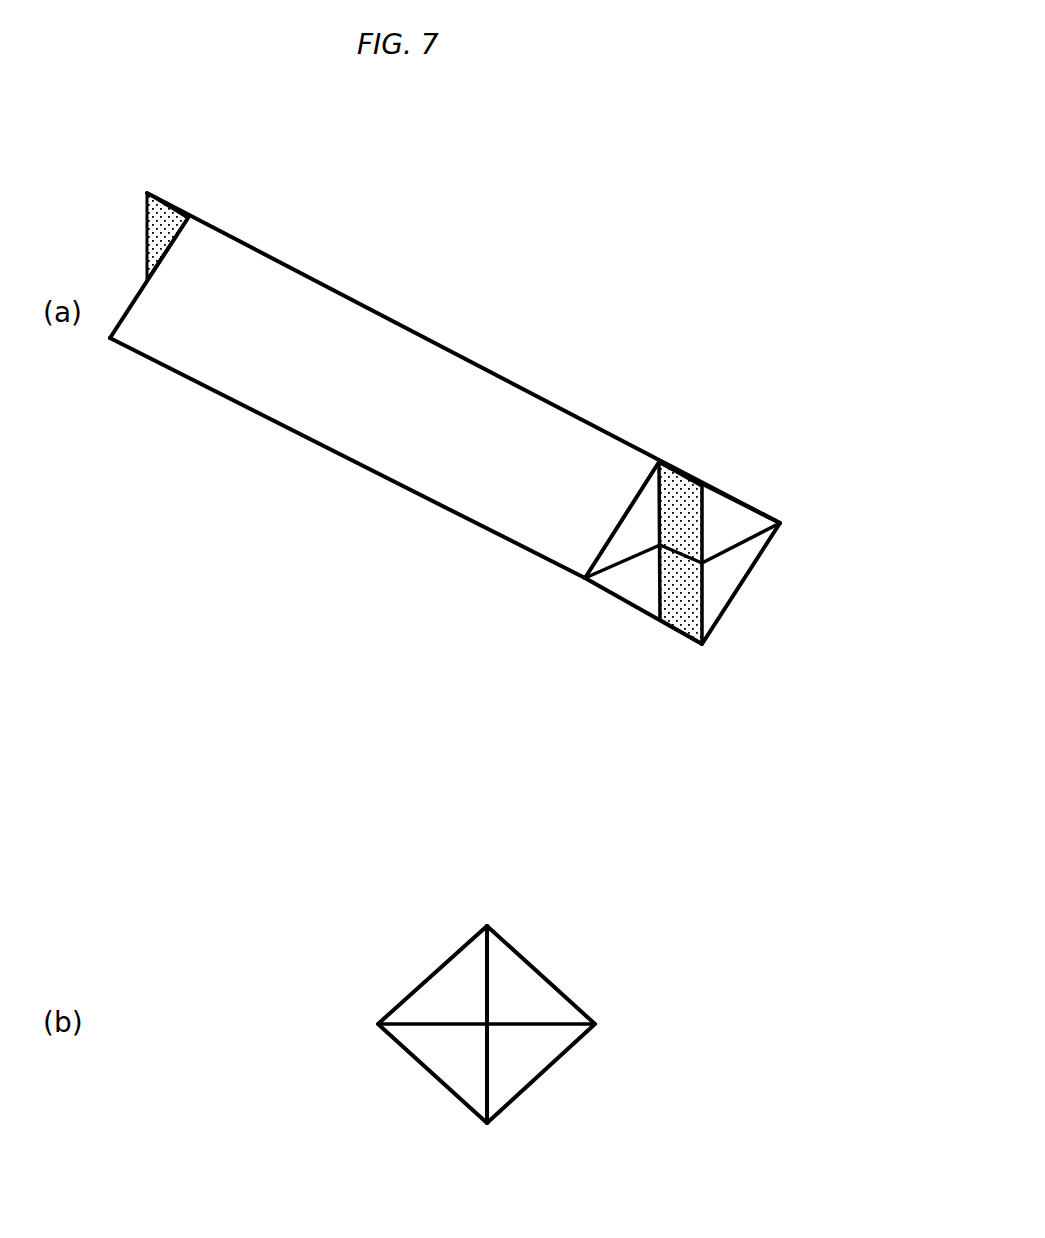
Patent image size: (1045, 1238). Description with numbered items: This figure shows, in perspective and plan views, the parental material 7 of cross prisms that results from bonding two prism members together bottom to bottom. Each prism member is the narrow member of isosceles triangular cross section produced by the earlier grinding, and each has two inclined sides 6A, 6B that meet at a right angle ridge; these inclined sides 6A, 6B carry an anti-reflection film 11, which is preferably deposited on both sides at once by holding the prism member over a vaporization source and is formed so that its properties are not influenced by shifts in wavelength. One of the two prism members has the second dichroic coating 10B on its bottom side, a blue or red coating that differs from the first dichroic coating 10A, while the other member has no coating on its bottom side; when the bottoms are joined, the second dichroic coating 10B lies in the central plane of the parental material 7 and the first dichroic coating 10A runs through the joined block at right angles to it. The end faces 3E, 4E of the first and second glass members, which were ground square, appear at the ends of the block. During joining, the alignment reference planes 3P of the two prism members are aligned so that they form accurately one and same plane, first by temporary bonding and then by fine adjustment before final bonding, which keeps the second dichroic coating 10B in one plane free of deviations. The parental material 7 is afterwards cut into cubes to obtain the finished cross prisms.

The cross prism parental material 7 is at (450, 625).
The alignment reference plane 3P is at (160, 235).
The end face of the first glass member 3E is at (720, 513).
The end face of the second glass member 4E is at (632, 525).
The inclined side of the prism member 6A is at (443, 345).
The inclined side of the prism member 6B is at (268, 382).
The anti-reflection film 11 is at (450, 674).
The first dichroic coating 10A is at (658, 605).
The second dichroic coating 10B is at (758, 527).